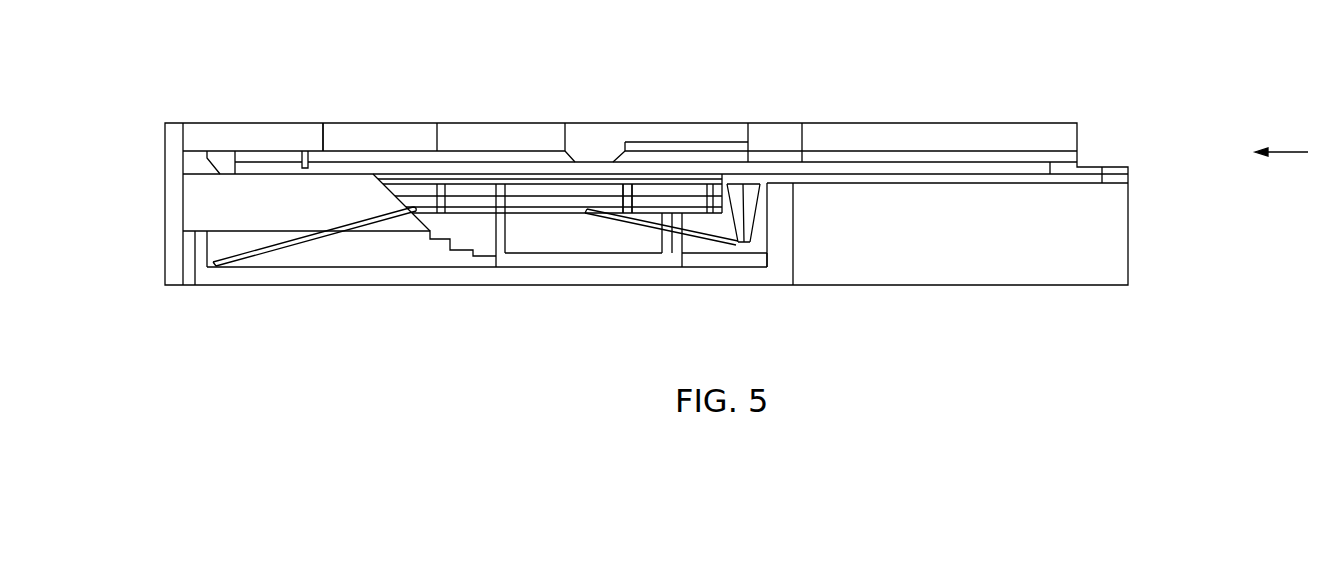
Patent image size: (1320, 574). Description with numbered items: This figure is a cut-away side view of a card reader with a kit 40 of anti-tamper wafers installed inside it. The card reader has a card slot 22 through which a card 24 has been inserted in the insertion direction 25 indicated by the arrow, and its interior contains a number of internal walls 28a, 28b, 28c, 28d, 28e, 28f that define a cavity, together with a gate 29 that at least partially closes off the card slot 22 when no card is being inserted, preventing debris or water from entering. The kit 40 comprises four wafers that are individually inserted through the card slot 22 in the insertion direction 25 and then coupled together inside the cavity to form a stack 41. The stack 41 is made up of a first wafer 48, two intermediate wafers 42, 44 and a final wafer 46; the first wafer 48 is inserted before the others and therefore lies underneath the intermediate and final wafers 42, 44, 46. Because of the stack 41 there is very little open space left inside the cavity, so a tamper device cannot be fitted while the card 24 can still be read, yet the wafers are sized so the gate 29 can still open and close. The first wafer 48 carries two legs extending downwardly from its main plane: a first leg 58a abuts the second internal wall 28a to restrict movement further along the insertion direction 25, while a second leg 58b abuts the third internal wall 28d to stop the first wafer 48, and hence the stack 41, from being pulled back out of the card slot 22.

The card slot 22 is at (1078, 173).
The card 24 is at (1058, 167).
The insertion direction 25 is at (1281, 139).
The second internal wall 28a is at (200, 254).
The internal wall 28b is at (258, 275).
The internal wall 28c is at (500, 238).
The third internal wall 28d is at (665, 243).
The internal wall 28e is at (777, 252).
The internal wall 28f is at (548, 152).
The gate 29 is at (752, 240).
The kit 40 is at (651, 227).
The stack of wafers 41 is at (645, 190).
The intermediate wafer 42 is at (750, 216).
The intermediate wafer 44 is at (742, 200).
The final wafer 46 is at (742, 186).
The first wafer 48 is at (878, 188).
The first leg 58a is at (335, 237).
The second leg 58b is at (640, 220).